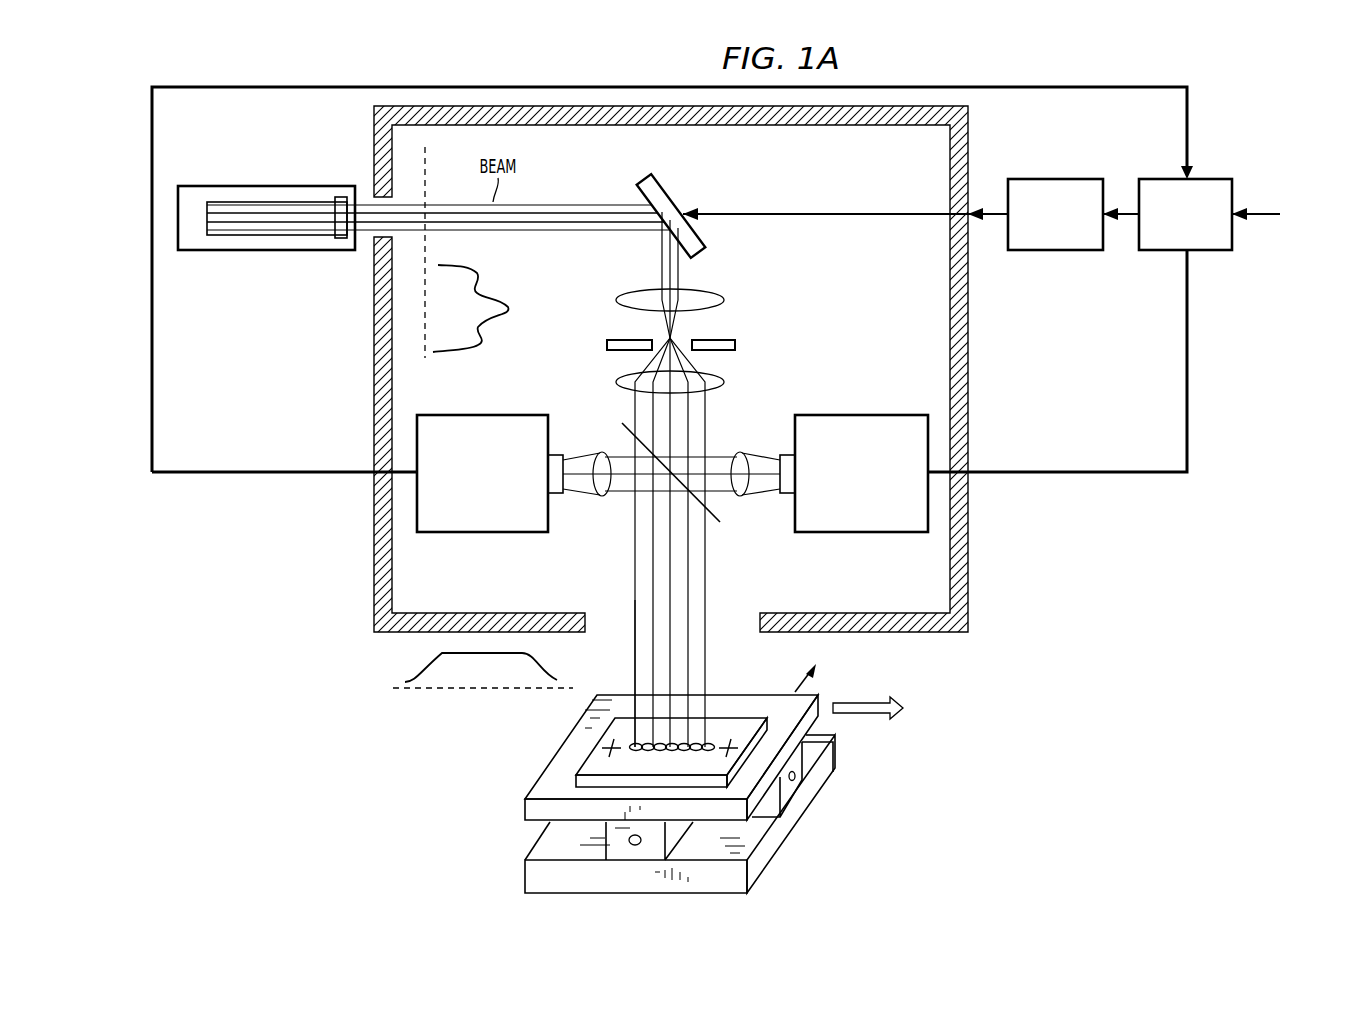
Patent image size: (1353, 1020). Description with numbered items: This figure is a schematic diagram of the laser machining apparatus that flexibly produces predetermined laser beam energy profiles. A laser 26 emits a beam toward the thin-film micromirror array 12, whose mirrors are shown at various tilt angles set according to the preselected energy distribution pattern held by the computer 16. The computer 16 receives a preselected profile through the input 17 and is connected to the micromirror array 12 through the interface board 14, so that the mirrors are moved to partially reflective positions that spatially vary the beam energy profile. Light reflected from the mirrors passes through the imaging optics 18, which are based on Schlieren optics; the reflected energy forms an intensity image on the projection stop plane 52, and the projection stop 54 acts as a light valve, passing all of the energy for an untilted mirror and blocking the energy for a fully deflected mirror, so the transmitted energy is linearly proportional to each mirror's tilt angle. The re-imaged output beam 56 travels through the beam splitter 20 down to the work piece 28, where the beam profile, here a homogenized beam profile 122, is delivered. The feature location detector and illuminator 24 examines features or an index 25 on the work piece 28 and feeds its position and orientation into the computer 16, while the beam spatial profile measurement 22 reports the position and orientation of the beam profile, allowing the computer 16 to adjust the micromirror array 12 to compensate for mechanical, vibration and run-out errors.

The thin-film micromirror array 12 is at (684, 211).
The interface board 14 is at (1058, 156).
The computer 16 is at (1162, 156).
The input 17 is at (1262, 191).
The imaging optics 18 is at (766, 338).
The beam splitter 20 is at (720, 514).
The beam spatial profile measurement 22 is at (865, 560).
The feature location detector & illuminator 24 is at (483, 560).
The index 25 is at (605, 749).
The laser 26 is at (264, 251).
The work piece 28 is at (808, 803).
The projection stop plane 52 is at (709, 340).
The projection stop 54 is at (613, 340).
The output beam 56 is at (635, 605).
The beam profile 122 is at (500, 318).